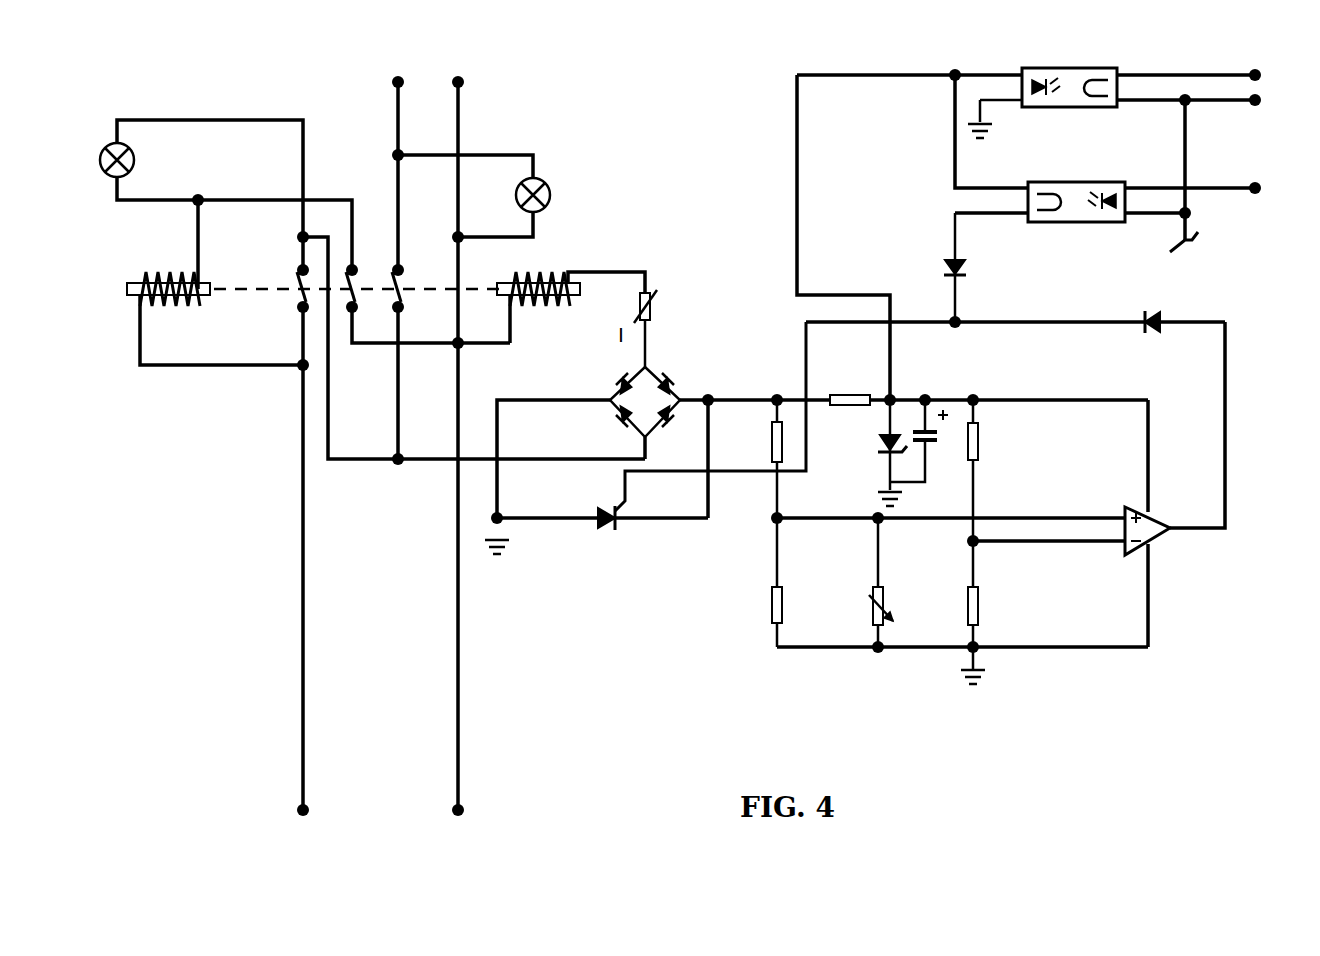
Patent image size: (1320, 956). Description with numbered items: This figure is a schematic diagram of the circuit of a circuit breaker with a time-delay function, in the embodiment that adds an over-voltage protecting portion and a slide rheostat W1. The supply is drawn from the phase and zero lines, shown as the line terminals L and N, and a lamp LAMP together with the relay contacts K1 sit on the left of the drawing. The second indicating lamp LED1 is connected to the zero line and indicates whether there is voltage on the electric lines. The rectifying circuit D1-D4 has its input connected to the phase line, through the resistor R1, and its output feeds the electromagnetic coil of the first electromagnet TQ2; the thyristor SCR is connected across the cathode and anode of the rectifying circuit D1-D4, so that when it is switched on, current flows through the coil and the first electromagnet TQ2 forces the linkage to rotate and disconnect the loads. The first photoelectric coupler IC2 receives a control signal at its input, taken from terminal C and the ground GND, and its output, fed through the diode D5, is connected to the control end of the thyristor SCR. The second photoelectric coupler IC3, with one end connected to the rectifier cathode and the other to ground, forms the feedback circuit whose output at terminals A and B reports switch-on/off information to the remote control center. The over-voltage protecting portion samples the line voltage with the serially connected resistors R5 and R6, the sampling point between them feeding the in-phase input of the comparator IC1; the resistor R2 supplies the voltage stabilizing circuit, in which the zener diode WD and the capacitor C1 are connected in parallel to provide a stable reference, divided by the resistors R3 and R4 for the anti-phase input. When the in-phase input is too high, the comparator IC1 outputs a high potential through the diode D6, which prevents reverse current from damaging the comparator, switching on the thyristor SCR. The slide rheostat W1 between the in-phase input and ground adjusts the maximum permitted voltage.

The indicator lamp LAMP is at (117, 160).
The relay K1 is at (313, 281).
The live line terminal L is at (329, 440).
The neutral line terminal N is at (472, 449).
The second indicating lamp LED1 is at (510, 196).
The first electromagnet TQ2 is at (571, 309).
The thermistor R1 is at (663, 328).
The rectifying circuit D1-D4 is at (607, 413).
The thyristor SCR is at (651, 446).
The resistor R5 is at (761, 459).
The resistor R6 is at (797, 582).
The resistor R2 is at (850, 385).
The zener diode WD is at (867, 453).
The capacitor C1 is at (925, 441).
The resistor R3 is at (992, 470).
The resistor R4 is at (992, 594).
The slide rheostat W1 is at (901, 582).
The comparator IC1 is at (1001, 484).
The diode D6 is at (1015, 310).
The diode D5 is at (977, 267).
The second photoelectric coupler IC3 is at (1026, 101).
The first photoelectric coupler IC2 is at (1105, 173).
The terminal A is at (1271, 76).
The terminal B is at (1271, 103).
The terminal C is at (1271, 190).
The ground terminal GND is at (1211, 180).